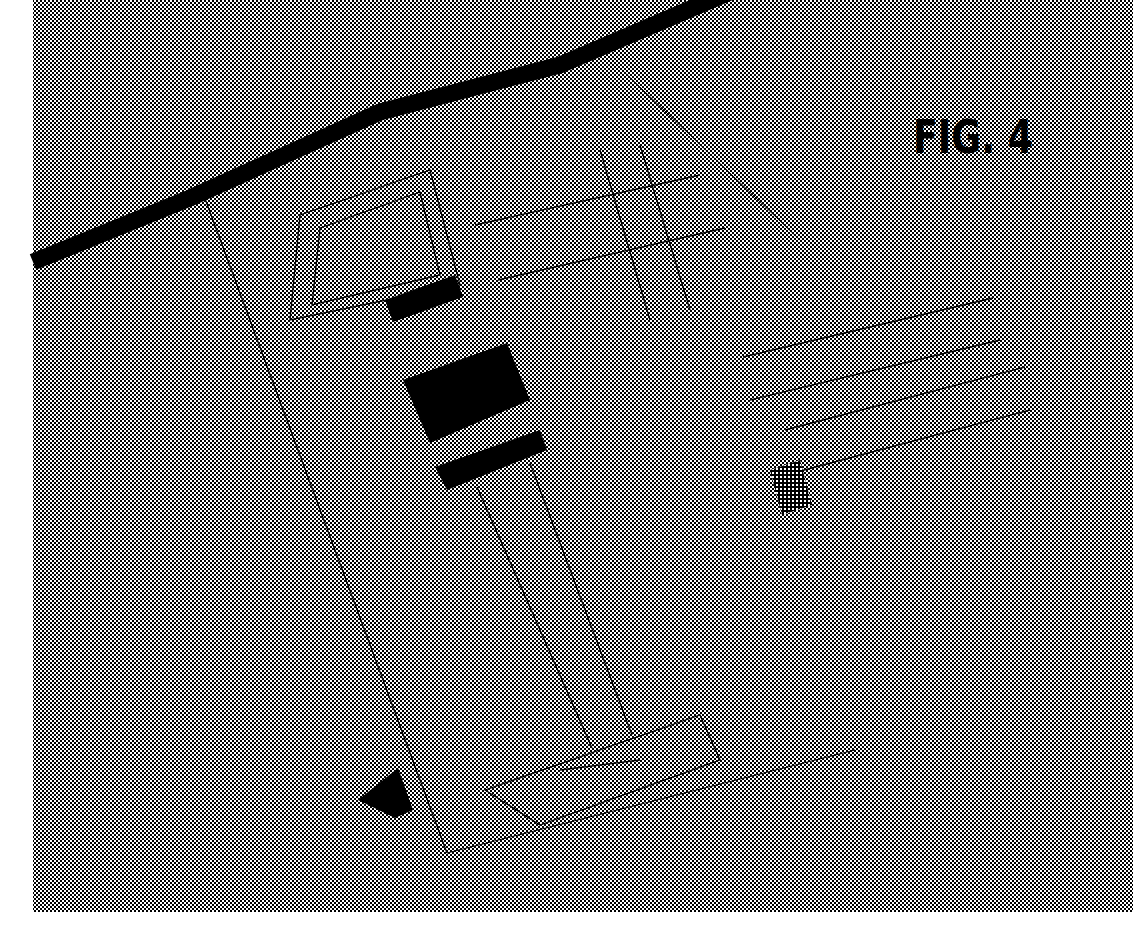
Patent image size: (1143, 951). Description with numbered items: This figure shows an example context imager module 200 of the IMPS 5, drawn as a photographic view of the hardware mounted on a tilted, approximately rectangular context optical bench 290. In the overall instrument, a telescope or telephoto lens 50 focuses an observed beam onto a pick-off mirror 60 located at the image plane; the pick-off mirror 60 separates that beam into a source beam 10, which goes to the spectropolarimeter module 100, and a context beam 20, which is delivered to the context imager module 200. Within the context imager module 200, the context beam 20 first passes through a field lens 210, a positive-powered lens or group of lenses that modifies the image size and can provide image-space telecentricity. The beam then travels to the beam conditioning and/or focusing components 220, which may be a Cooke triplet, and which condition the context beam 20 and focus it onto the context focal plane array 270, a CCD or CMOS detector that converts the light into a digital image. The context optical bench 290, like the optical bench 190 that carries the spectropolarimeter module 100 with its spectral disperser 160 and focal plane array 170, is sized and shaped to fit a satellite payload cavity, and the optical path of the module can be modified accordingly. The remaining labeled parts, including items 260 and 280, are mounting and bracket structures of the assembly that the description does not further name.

The IMPS 5 is at (945, 830).
The source beam 10 is at (511, 465).
The context beam 20 is at (519, 605).
The telescope or telephoto lens 50 is at (928, 359).
The pick-off mirror 60 is at (822, 520).
The spectropolarimeter module 100 is at (488, 462).
The spectral disperser 160 is at (333, 801).
The focal plane array 170 is at (170, 310).
The optical bench 190 is at (455, 873).
The context imager module 200 is at (450, 131).
The field lens 210 is at (668, 232).
The beam conditioning and/or focusing components 220 is at (433, 382).
The upper bracket 260 is at (677, 162).
The context focal plane array 270 is at (595, 751).
The mounting bracket 280 is at (375, 222).
The context optical bench 290 is at (784, 680).